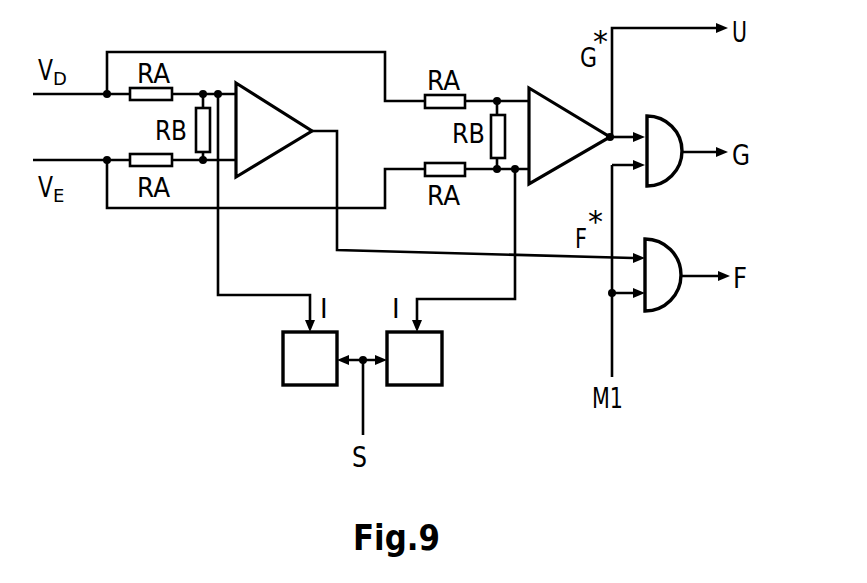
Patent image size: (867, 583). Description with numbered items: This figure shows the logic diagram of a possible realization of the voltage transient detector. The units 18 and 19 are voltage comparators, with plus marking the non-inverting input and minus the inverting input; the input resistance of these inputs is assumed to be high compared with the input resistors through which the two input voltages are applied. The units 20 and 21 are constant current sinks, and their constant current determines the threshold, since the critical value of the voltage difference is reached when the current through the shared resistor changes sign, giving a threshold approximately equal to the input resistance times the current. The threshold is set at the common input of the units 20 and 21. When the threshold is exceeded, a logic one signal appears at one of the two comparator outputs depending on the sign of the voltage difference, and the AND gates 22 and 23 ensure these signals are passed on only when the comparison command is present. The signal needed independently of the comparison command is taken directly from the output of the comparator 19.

The voltage comparator 18 is at (434, 170).
The voltage comparator 19 is at (582, 136).
The constant current sink 20 is at (310, 358).
The constant current sink 21 is at (414, 358).
The AND gate 22 is at (660, 133).
The AND gate 23 is at (658, 262).